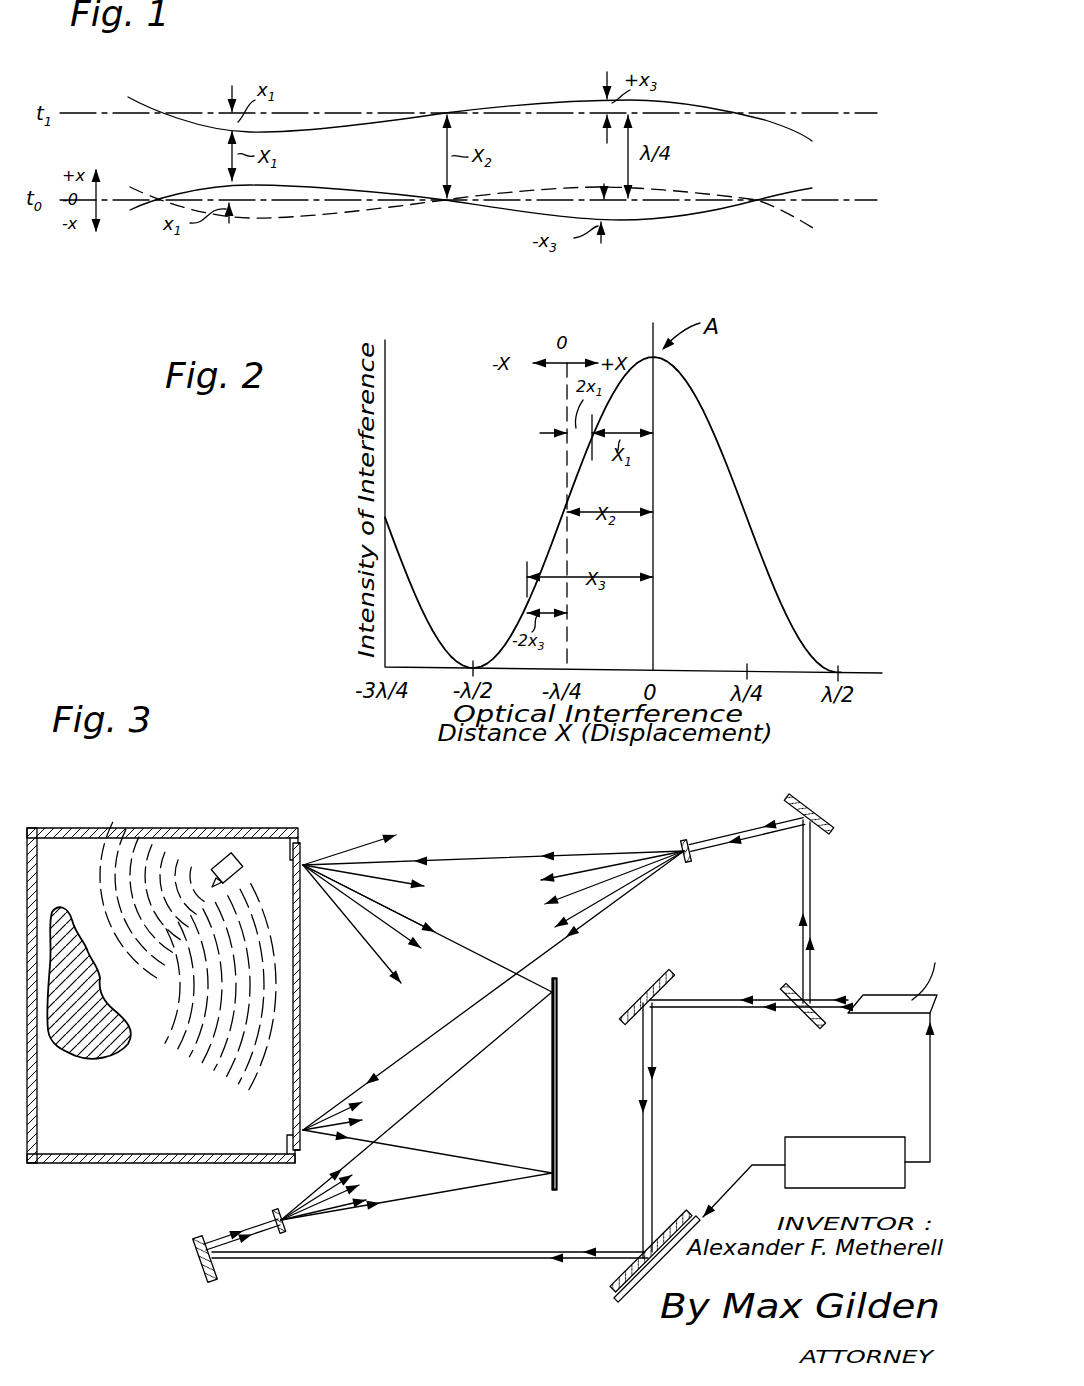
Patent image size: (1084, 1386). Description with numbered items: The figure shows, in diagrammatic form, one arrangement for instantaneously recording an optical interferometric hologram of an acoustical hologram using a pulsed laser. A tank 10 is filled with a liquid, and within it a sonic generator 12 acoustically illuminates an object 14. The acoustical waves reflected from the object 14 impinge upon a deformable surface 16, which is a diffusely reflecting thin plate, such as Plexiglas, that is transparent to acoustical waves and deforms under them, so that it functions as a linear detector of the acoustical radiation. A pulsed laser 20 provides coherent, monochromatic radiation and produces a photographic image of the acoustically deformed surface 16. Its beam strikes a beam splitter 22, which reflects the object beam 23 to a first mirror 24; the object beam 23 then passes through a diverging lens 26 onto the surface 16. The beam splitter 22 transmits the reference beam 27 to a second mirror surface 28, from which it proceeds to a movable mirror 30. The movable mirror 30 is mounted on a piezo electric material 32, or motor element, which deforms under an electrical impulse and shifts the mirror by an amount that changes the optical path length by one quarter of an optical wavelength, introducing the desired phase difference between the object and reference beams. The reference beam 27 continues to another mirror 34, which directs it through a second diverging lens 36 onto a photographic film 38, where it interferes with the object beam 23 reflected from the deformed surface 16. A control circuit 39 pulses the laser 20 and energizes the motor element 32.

The tank 10 is at (115, 1164).
The sonic generator 12 is at (238, 856).
The object 14 is at (90, 1022).
The deformable surface 16 is at (304, 847).
The pulsed laser 20 is at (877, 1014).
The beam splitter 22 is at (807, 1022).
The object beam 23 is at (813, 899).
The first mirror 24 is at (827, 834).
The diverging lens 26 is at (691, 861).
The reference beam 27 is at (734, 1010).
The second mirror surface 28 is at (660, 979).
The movable mirror 30 is at (693, 1227).
The piezo electric material 32 is at (623, 1300).
The mirror 34 is at (197, 1262).
The second diverging lens 36 is at (278, 1211).
The photographic film 38 is at (558, 1088).
The control circuit 39 is at (830, 1137).